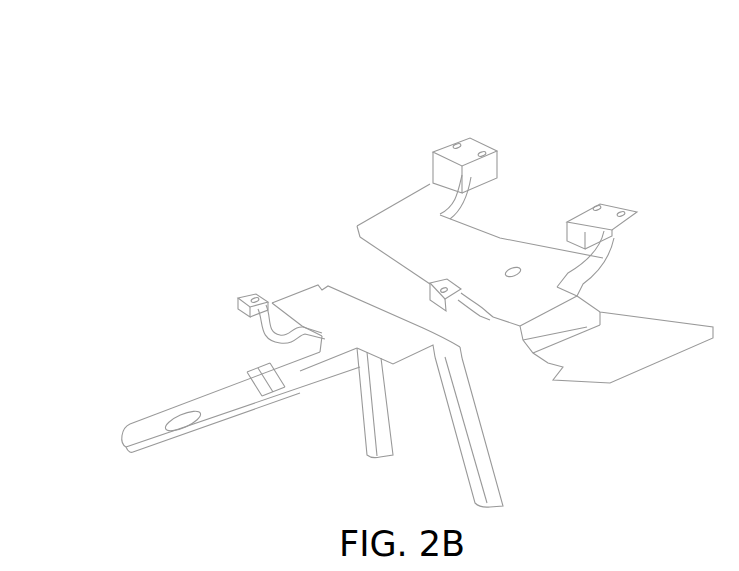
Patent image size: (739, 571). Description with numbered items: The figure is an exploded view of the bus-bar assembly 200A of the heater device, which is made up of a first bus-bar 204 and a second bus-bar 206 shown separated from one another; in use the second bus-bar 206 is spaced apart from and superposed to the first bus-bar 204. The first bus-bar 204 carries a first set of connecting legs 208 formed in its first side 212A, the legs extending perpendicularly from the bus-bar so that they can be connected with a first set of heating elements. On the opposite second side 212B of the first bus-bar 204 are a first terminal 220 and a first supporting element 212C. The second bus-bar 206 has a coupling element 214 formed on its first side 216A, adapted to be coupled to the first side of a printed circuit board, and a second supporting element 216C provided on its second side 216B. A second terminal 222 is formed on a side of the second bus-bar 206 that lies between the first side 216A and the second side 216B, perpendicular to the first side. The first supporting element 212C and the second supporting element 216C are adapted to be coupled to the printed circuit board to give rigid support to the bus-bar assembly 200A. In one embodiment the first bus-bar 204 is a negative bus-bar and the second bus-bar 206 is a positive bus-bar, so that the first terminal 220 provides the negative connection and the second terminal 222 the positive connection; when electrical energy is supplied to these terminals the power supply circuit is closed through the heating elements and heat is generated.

The bus-bar assembly 200A is at (104, 303).
The first bus-bar 204 is at (300, 318).
The second bus-bar 206 is at (393, 228).
The first set of connecting legs 208 is at (465, 417).
The first side of the first bus-bar 212A is at (377, 318).
The second side of the first bus-bar 212B is at (363, 353).
The first supporting element 212C is at (247, 299).
The coupling element 214 is at (456, 170).
The first side of the second bus-bar 216A is at (495, 240).
The second side of the second bus-bar 216B is at (410, 257).
The second supporting element 216C is at (453, 298).
The first terminal 220 is at (188, 424).
The second terminal 222 is at (567, 342).